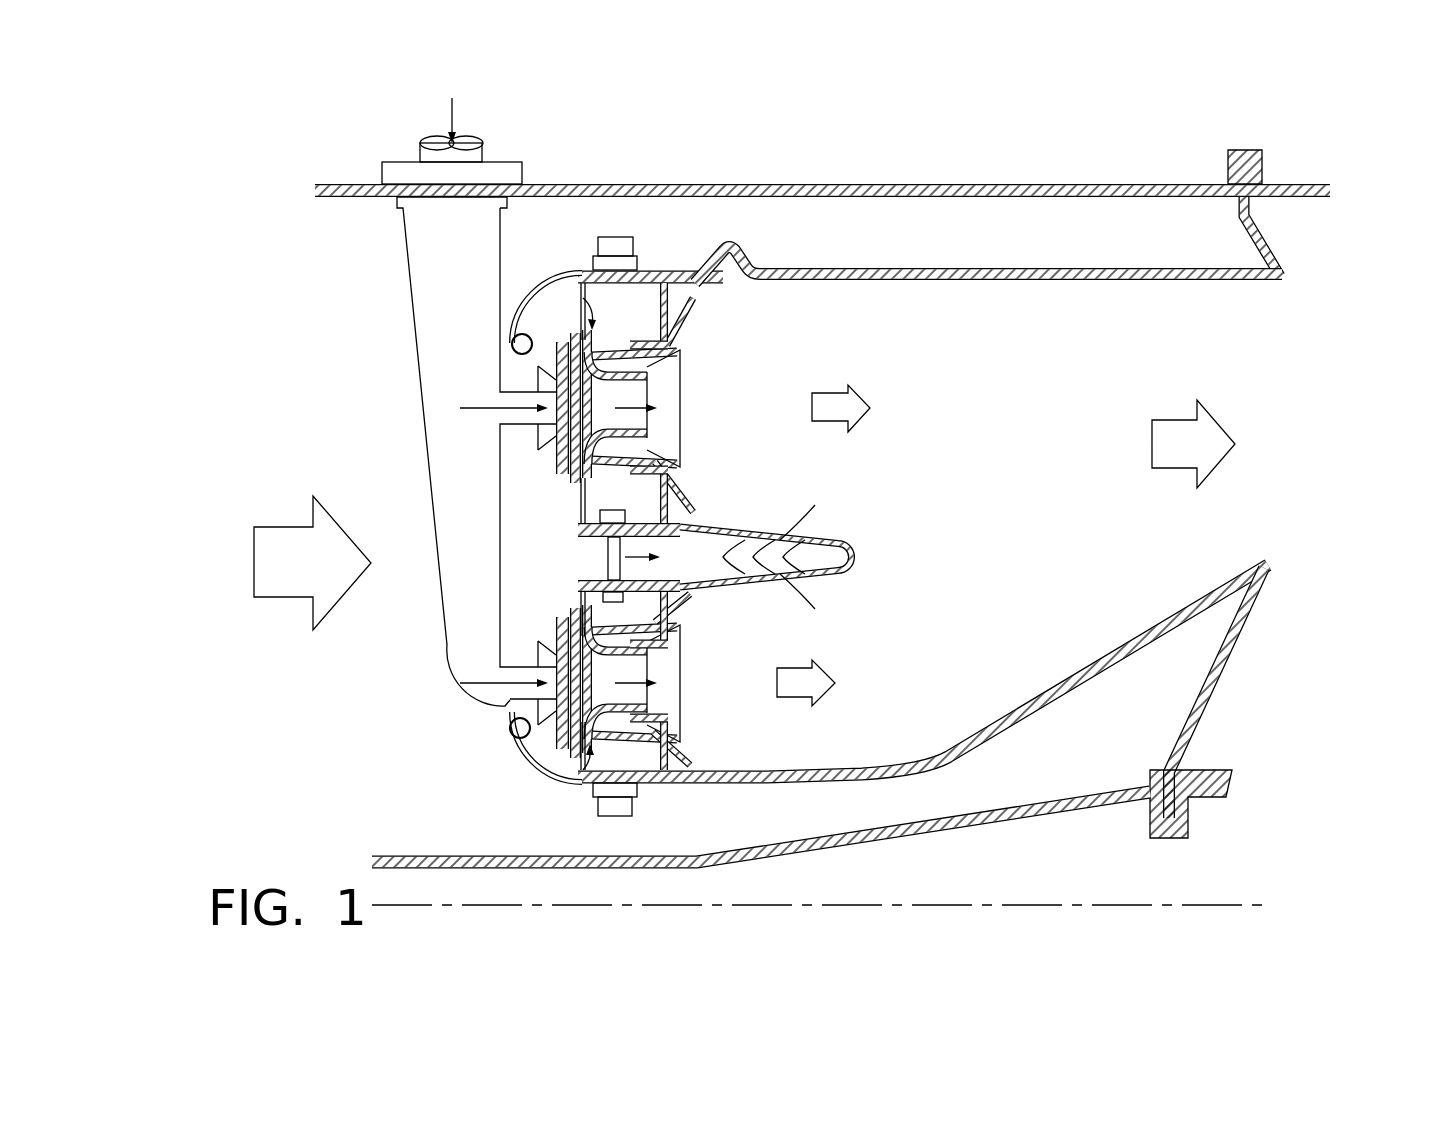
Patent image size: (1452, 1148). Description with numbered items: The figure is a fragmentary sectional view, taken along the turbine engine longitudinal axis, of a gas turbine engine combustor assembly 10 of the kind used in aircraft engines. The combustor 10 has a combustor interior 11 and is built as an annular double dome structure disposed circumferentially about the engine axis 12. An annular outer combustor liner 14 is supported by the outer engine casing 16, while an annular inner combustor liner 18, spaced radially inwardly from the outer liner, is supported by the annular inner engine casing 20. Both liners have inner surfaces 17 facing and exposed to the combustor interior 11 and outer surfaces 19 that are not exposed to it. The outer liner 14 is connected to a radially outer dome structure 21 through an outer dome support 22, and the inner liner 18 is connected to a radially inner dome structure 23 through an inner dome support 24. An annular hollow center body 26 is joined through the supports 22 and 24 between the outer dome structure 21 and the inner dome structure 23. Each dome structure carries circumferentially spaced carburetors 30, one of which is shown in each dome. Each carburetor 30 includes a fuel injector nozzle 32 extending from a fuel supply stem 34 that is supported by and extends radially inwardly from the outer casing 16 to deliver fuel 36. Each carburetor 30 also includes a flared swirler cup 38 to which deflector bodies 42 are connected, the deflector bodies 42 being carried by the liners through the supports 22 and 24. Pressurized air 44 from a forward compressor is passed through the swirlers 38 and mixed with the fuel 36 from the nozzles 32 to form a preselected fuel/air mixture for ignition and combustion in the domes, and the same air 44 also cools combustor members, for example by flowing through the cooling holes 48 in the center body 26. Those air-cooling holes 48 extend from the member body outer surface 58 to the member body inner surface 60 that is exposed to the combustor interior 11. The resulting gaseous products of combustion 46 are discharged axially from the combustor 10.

The gas turbine engine combustor assembly 10 is at (1130, 255).
The combustor interior 11 is at (1024, 472).
The engine axis 12 is at (943, 900).
The annular outer combustor liner 14 is at (842, 262).
The outer engine casing 16 is at (1020, 183).
The inner surfaces 17 is at (1022, 278).
The annular inner combustor liner 18 is at (1012, 713).
The outer surfaces 19 is at (920, 265).
The annular inner engine casing 20 is at (887, 840).
The radially outer dome structure 21 is at (752, 356).
The outer dome support 22 is at (660, 318).
The radially inner dome structure 23 is at (788, 737).
The inner dome support 24 is at (643, 783).
The annular hollow center body 26 is at (880, 556).
The carburetor 30 is at (558, 583).
The fuel injector nozzle 32 is at (505, 430).
The fuel supply stem 34 is at (408, 280).
The fuel 36 is at (450, 108).
The flared swirler or swirler cup 38 is at (687, 366).
The deflector body 42 is at (698, 318).
The pressurized air 44 is at (283, 527).
The gaseous products of combustion 46 is at (830, 392).
The cooling holes 48 is at (752, 540).
The member body outer surface 58 is at (690, 530).
The member body inner surface 60 is at (858, 543).